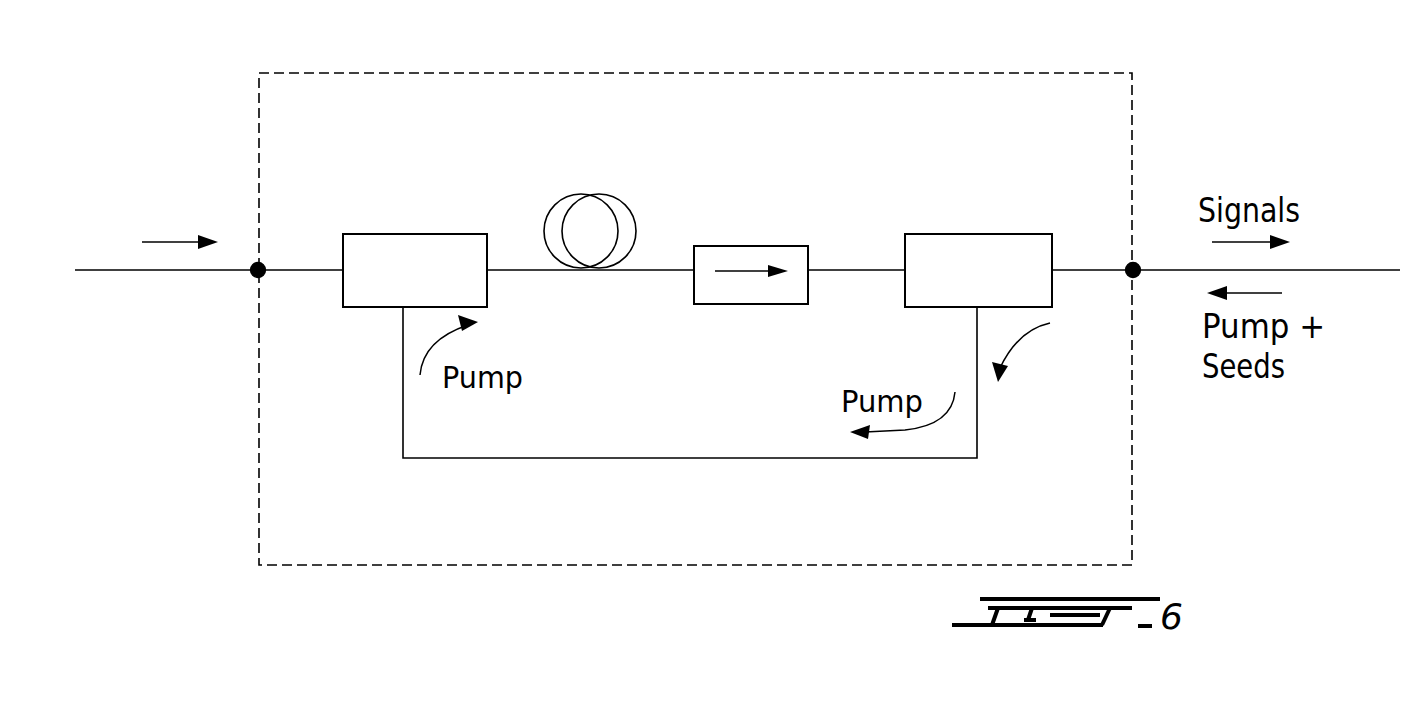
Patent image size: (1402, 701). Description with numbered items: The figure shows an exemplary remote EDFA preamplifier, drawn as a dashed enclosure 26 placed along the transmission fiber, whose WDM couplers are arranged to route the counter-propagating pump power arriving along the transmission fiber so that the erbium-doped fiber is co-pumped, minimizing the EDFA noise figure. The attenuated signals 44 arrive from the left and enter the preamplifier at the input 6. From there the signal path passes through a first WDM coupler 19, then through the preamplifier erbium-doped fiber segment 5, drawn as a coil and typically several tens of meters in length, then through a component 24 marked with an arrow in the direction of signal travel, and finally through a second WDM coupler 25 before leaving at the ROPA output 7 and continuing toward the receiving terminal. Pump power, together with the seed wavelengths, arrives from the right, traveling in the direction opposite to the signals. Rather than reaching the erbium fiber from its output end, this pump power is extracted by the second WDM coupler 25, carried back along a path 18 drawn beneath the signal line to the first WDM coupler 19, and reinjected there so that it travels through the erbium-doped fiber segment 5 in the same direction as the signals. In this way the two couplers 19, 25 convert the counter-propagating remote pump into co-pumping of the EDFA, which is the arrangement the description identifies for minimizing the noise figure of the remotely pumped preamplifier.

The amplifier module (dashed enclosure) 26 is at (613, 73).
The input of the ROPA preamplifier 6 is at (262, 276).
The ROPA output 7 is at (1127, 278).
The WDM coupler 19 is at (420, 234).
The WDM coupler 25 is at (962, 234).
The preamplifier erbium-doped fiber segment 5 is at (598, 194).
The optical isolator 24 is at (735, 246).
The pump bypass path 18 is at (637, 458).
The attenuated signals 44 is at (182, 192).